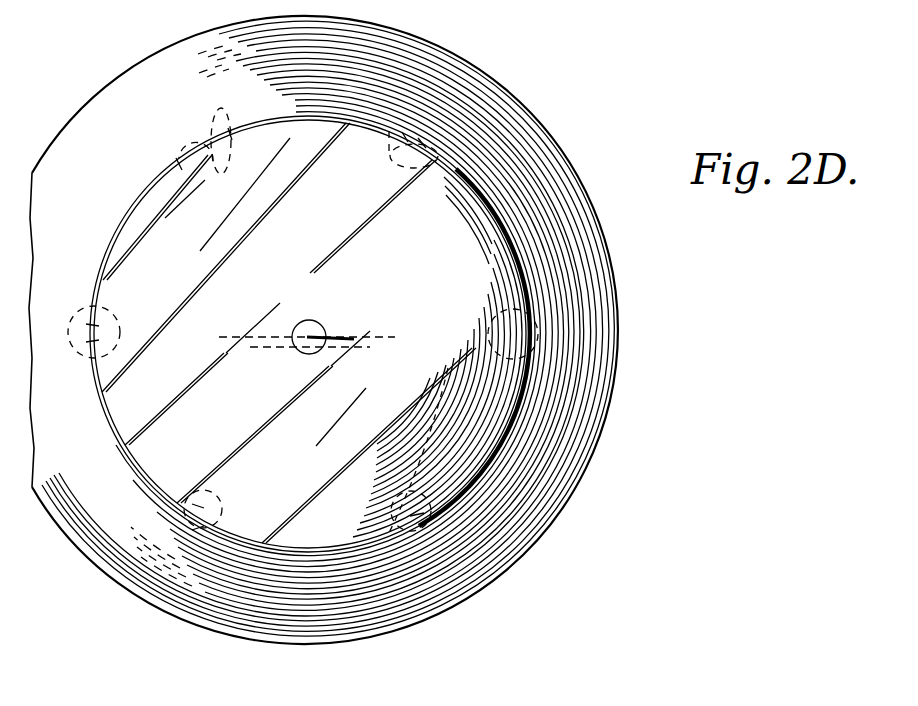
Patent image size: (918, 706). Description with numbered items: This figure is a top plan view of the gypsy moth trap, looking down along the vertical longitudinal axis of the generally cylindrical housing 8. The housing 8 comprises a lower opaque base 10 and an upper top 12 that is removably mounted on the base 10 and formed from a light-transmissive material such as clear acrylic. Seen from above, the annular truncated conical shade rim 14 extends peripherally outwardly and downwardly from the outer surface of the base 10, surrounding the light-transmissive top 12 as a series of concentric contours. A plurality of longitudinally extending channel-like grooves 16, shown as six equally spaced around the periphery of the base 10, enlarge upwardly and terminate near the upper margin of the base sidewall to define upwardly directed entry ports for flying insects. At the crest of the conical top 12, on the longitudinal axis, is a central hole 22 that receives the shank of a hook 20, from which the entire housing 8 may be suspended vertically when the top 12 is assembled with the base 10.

The housing 8 is at (531, 75).
The base portion 10 is at (181, 622).
The top portion 12 is at (148, 207).
The shade rim 14 is at (556, 478).
The channel-like grooves 16 is at (470, 338).
The hook 20 is at (330, 329).
The central hole 22 is at (301, 318).